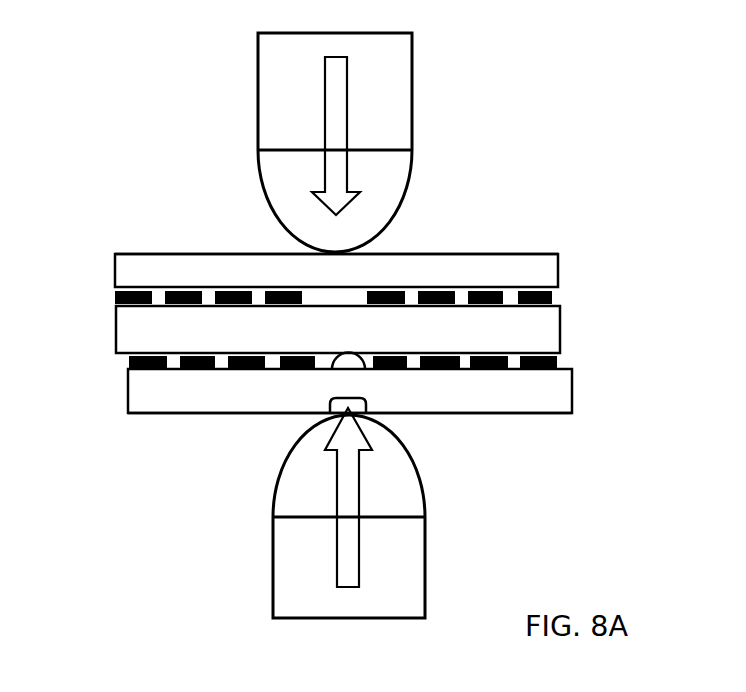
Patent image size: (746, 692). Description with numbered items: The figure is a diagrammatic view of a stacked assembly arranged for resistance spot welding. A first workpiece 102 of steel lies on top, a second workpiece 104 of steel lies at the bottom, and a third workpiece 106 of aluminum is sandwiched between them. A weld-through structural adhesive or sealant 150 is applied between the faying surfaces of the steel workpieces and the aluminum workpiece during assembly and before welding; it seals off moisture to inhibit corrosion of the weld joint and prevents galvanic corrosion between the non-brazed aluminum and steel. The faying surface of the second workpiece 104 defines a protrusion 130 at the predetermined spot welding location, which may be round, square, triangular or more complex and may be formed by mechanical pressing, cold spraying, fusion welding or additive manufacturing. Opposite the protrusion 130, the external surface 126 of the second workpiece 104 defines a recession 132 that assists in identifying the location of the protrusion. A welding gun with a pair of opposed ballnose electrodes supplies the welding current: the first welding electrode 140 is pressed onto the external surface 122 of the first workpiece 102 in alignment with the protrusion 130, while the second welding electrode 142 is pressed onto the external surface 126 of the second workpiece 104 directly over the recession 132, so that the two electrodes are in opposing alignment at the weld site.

The first workpiece 102 is at (148, 273).
The second workpiece 104 is at (152, 398).
The third workpiece 106 is at (130, 330).
The external surface 122 is at (493, 252).
The external surface 126 is at (558, 413).
The protrusion 130 is at (350, 364).
The recession 132 is at (347, 418).
The first welding electrode 140 is at (393, 97).
The second welding electrode 142 is at (303, 590).
The weld-through structural adhesive or sealant 150 is at (555, 295).